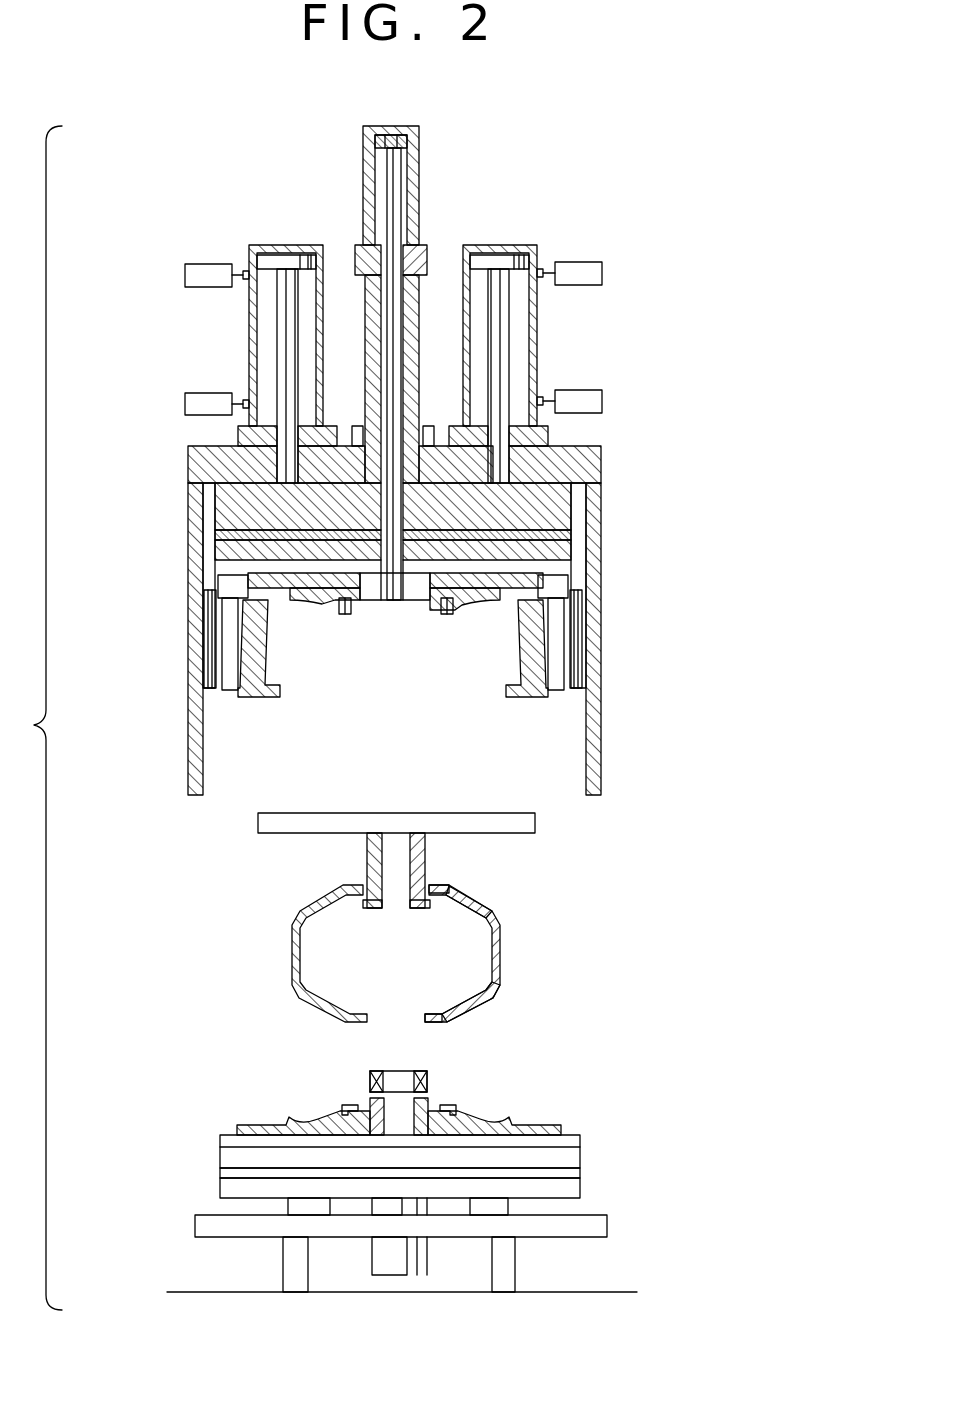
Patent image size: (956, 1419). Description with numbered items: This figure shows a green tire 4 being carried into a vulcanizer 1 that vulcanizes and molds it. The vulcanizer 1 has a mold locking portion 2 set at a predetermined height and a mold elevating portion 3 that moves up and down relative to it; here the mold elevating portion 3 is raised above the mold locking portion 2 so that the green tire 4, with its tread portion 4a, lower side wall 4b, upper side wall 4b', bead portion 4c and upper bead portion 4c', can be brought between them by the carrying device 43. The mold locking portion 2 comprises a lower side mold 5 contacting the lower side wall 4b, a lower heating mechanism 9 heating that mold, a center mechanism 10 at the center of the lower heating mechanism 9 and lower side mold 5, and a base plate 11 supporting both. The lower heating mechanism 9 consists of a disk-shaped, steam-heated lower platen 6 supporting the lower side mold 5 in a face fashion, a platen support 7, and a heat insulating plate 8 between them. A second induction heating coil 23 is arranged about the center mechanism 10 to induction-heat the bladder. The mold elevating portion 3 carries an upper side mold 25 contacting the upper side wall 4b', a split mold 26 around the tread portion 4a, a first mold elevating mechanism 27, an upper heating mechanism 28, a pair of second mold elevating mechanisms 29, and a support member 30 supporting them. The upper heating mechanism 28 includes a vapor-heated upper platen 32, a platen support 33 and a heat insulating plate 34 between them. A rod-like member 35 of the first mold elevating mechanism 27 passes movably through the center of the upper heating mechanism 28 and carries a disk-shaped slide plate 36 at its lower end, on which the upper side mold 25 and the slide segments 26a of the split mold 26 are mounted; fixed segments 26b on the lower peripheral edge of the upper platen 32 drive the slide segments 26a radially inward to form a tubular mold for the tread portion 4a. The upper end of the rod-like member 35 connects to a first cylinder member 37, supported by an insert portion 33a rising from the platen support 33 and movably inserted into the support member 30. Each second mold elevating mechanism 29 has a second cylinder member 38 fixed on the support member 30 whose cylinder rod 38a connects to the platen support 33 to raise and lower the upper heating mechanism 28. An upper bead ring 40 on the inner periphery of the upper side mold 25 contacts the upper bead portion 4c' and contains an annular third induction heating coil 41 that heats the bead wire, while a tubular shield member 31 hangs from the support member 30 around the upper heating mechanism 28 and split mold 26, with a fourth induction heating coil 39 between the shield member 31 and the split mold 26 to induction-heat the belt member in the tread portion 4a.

The vulcanizer 1 is at (650, 250).
The mold locking portion 2 is at (588, 1122).
The mold elevating portion 3 is at (585, 235).
The green tire 4 is at (513, 913).
The tread portion 4a is at (500, 958).
The lower side wall 4b is at (490, 1015).
The upper side wall 4b' is at (497, 886).
The bead portion 4c is at (431, 990).
The upper bead portion 4c' is at (460, 866).
The lower side mold 5 is at (490, 1122).
The lower platen 6 is at (568, 1157).
The platen support 7 is at (570, 1188).
The heat insulating plate 8 is at (570, 1172).
The lower heating mechanism 9 is at (637, 1123).
The center mechanism 10 is at (438, 1268).
The base plate 11 is at (580, 1226).
The second induction heating coil 23 is at (388, 1071).
The upper side mold 25 is at (485, 600).
The split mold 26 is at (684, 635).
The slide segment 26a is at (578, 680).
The fixed segment 26b is at (575, 640).
The first mold elevating mechanism 27 is at (442, 150).
The upper heating mechanism 28 is at (667, 488).
The second mold elevating mechanism 29 is at (171, 306).
The support member 30 is at (592, 464).
The shield member 31 is at (602, 766).
The upper platen 32 is at (585, 555).
The platen support 33 is at (585, 500).
The insert portion 33a is at (365, 300).
The heat insulating plate 34 is at (585, 533).
The rod-like member 35 is at (397, 336).
The slide plate 36 is at (587, 585).
The first cylinder member 37 is at (420, 205).
The second cylinder member 38 is at (249, 325).
The cylinder rod 38a is at (290, 362).
The fourth induction heating coil 39 is at (205, 641).
The upper bead ring 40 is at (425, 612).
The third induction heating coil 41 is at (447, 614).
The carrying device 43 is at (355, 813).